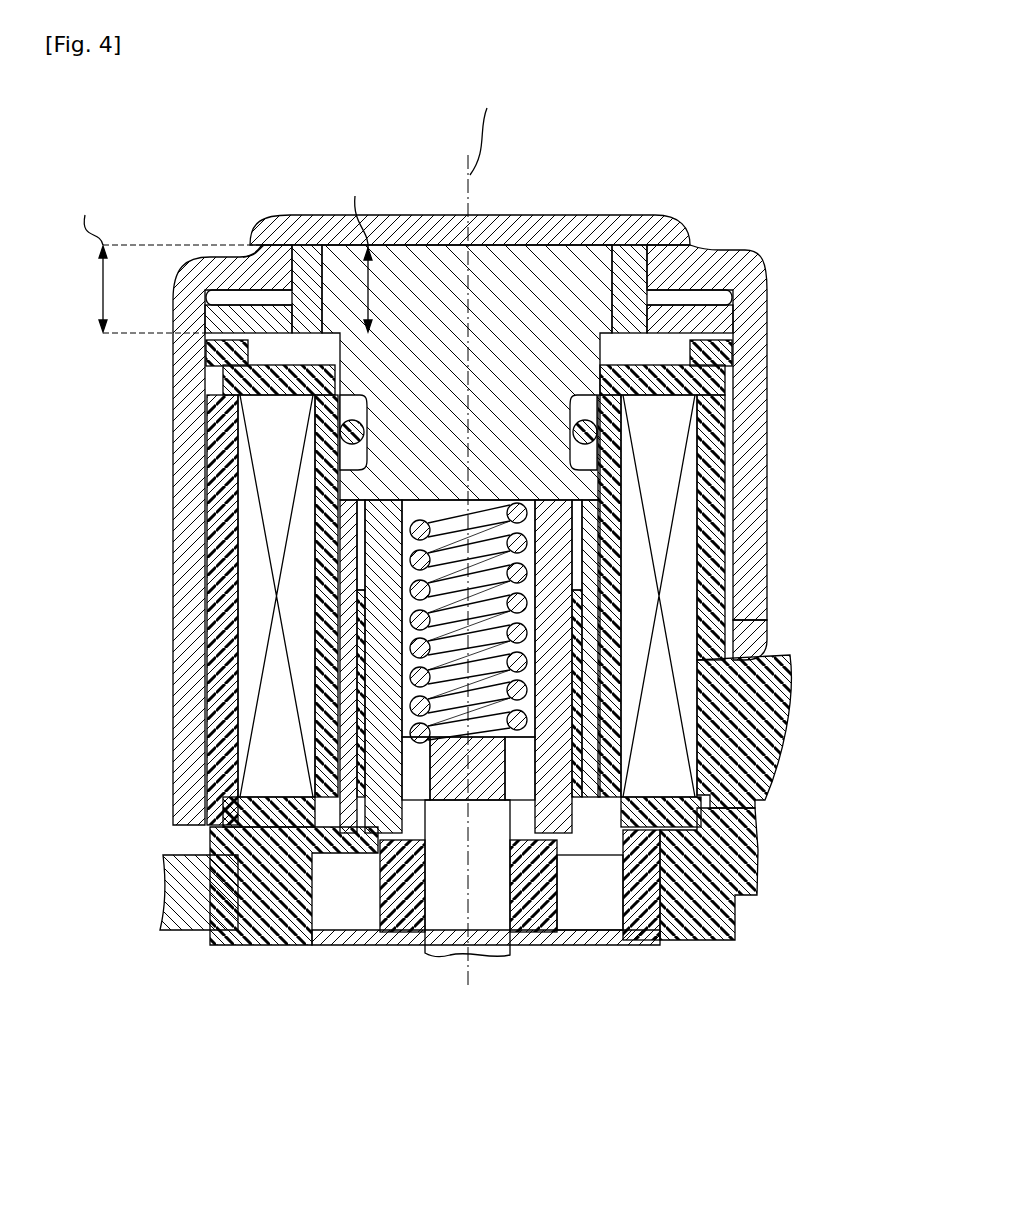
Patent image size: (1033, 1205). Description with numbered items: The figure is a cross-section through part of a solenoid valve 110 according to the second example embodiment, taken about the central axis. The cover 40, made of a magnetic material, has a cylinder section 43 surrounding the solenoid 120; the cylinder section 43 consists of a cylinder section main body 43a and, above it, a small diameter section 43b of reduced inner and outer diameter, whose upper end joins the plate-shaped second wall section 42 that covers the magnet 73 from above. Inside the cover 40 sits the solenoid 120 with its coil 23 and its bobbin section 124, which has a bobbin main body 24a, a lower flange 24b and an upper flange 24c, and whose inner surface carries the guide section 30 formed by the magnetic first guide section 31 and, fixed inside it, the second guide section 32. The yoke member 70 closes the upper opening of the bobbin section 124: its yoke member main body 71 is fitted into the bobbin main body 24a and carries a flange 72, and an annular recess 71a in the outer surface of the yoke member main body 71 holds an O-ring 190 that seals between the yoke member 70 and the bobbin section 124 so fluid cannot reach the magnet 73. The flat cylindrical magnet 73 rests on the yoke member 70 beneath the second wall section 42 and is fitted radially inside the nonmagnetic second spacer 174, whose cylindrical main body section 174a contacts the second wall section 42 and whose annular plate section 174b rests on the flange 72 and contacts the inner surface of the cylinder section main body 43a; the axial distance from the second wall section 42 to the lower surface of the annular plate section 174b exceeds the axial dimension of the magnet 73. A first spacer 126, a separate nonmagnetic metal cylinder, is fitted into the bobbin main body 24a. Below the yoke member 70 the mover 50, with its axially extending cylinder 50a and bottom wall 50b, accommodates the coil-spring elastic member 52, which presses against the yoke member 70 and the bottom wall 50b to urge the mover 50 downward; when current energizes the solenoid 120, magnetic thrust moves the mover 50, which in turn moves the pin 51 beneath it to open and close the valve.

The solenoid valve 110 is at (785, 170).
The cover 40 is at (706, 220).
The second wall section 42 is at (402, 243).
The cylinder section 43 is at (168, 393).
The cylinder section main body 43a is at (186, 530).
The small diameter section 43b is at (258, 246).
The flange 72 is at (258, 328).
The magnet 73 is at (433, 243).
The yoke member 70 is at (512, 330).
The yoke member main body 71 is at (540, 395).
The recess 71a is at (340, 428).
The O-ring 190 is at (352, 440).
The second spacer 174 is at (690, 250).
The main body section 174a is at (652, 265).
The annular plate section 174b is at (735, 330).
The bobbin section 124 is at (690, 346).
The upper flange 24c is at (690, 378).
The solenoid 120 is at (705, 452).
The coil 23 is at (685, 586).
The first spacer 126 is at (340, 576).
The bobbin main body 24a is at (690, 716).
The lower flange 24b is at (680, 786).
The mover 50 is at (455, 1028).
The cylinder 50a is at (386, 795).
The bottom wall 50b is at (440, 795).
The pin 51 is at (494, 950).
The elastic member 52 is at (513, 792).
The guide section 30 is at (648, 1028).
The first guide section 31 is at (592, 852).
The second guide section 32 is at (576, 856).